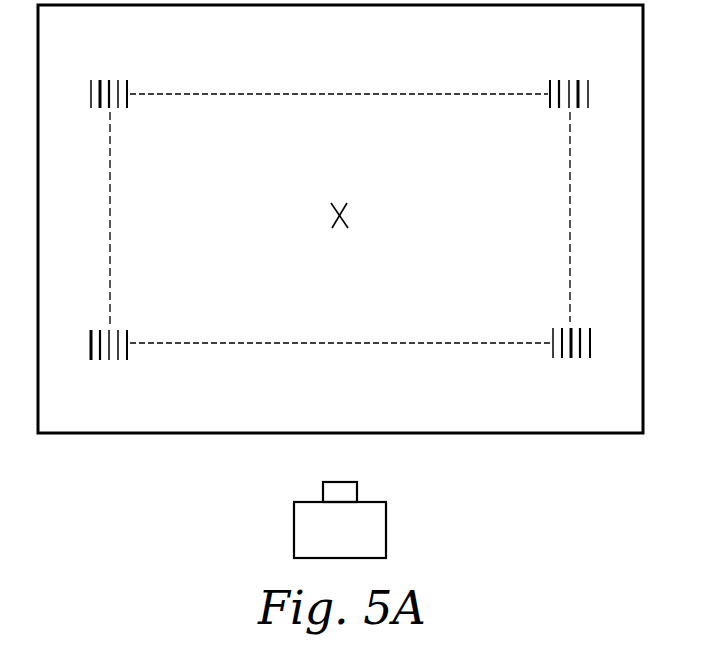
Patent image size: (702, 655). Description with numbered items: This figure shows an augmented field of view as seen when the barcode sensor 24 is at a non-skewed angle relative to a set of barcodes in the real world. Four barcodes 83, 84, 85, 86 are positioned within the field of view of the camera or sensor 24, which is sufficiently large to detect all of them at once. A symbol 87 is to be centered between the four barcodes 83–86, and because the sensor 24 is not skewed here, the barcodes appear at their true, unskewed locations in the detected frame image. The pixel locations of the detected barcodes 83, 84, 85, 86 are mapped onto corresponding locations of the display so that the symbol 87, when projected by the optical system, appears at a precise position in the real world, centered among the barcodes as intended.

The barcode 83 is at (128, 92).
The barcode 84 is at (128, 348).
The barcode 85 is at (588, 92).
The barcode 86 is at (552, 350).
The symbol 87 is at (350, 213).
The barcode sensor 24 is at (372, 532).